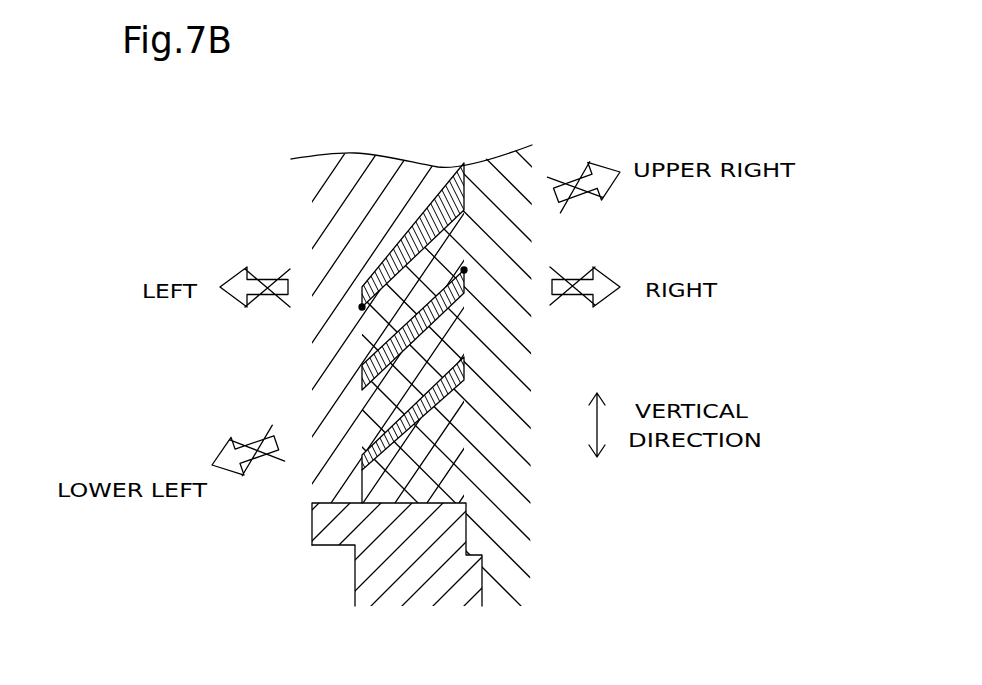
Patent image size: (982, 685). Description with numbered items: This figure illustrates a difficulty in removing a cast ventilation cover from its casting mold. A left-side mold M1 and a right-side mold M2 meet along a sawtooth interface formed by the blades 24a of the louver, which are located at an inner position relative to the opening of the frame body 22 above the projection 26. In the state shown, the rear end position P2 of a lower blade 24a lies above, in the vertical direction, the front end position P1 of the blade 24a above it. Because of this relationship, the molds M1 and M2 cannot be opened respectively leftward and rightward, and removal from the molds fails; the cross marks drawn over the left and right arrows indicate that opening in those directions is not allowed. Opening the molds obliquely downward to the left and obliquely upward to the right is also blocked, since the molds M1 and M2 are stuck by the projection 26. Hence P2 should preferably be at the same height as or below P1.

The blade 24a is at (417, 245).
The projection 26 is at (312, 528).
The frame body 22 is at (355, 587).
The left-side mold M1 is at (328, 157).
The right-side mold M2 is at (502, 155).
The front end position P1 is at (362, 307).
The rear end position P2 is at (464, 271).